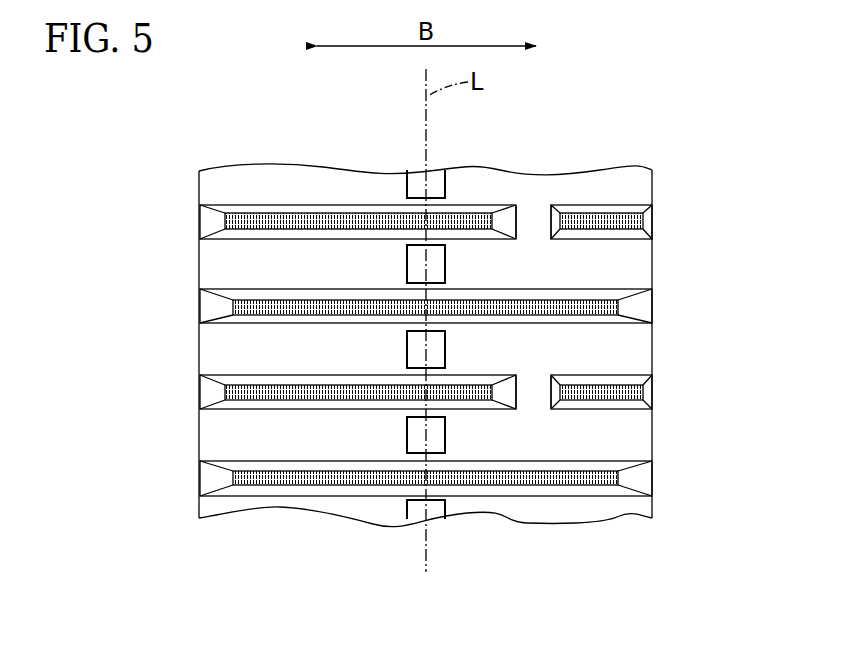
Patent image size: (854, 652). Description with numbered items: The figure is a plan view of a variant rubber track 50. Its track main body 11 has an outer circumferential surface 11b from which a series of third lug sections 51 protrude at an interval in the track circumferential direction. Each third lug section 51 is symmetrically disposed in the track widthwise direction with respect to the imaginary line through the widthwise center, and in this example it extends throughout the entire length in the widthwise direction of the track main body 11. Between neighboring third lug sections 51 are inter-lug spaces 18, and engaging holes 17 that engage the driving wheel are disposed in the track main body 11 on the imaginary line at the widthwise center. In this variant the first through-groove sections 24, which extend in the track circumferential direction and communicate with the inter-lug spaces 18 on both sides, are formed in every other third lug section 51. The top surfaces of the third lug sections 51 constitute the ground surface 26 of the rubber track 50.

The rubber track 50 is at (688, 123).
The track main body 11 is at (660, 170).
The outer circumferential surface 11b is at (618, 185).
The engaging hole 17 is at (407, 181).
The inter-lug space 18 is at (337, 278).
The first through-groove section 24 is at (534, 208).
The ground surface 26 is at (312, 208).
The third lug section 51 is at (227, 200).